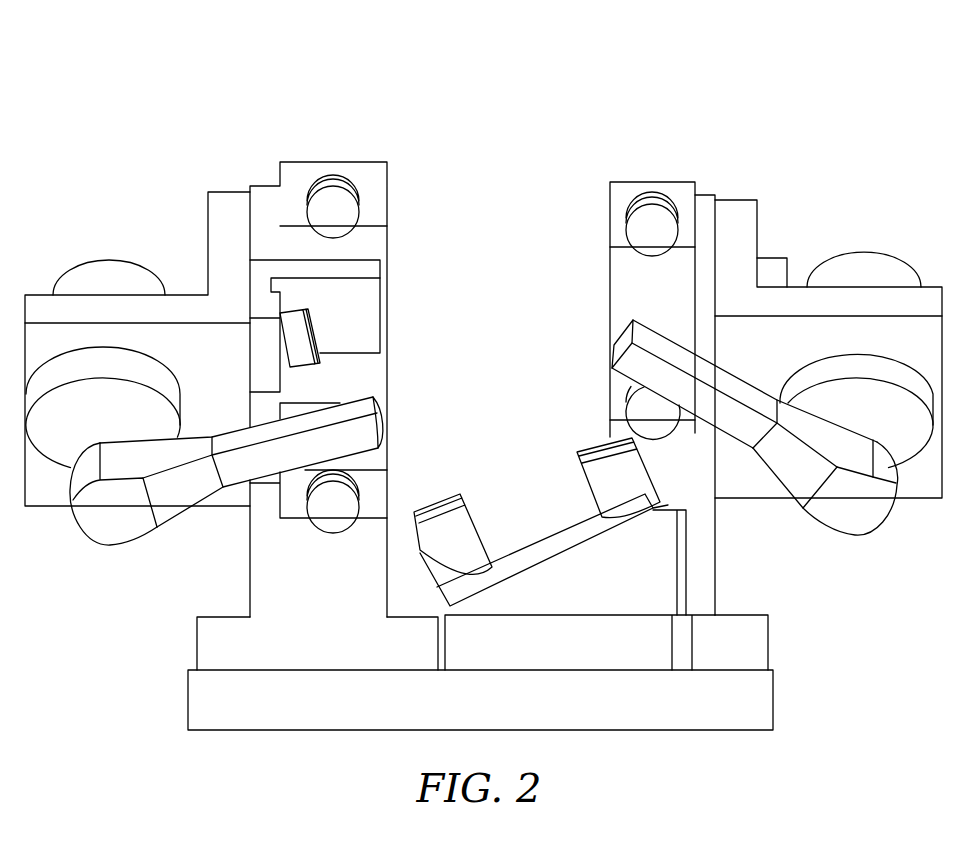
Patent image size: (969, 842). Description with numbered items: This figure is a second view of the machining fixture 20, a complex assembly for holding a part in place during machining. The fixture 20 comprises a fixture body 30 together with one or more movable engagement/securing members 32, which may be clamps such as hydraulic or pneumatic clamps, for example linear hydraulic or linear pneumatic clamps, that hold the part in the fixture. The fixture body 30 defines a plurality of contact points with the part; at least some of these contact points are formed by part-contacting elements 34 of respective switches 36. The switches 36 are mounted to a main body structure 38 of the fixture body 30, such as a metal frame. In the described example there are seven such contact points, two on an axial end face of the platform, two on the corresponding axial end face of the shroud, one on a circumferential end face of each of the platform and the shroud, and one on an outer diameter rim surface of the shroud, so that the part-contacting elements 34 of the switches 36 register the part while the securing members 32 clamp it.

The fixture 20 is at (757, 104).
The fixture body 30 is at (215, 650).
The movable engagement/securing member 32 is at (847, 362).
The part-contacting element 34 is at (370, 183).
The switch 36 is at (483, 496).
The main body structure 38 is at (463, 547).